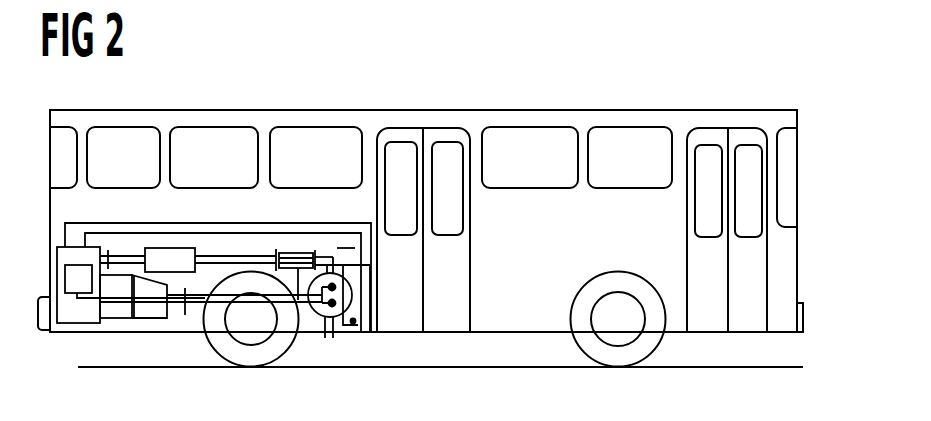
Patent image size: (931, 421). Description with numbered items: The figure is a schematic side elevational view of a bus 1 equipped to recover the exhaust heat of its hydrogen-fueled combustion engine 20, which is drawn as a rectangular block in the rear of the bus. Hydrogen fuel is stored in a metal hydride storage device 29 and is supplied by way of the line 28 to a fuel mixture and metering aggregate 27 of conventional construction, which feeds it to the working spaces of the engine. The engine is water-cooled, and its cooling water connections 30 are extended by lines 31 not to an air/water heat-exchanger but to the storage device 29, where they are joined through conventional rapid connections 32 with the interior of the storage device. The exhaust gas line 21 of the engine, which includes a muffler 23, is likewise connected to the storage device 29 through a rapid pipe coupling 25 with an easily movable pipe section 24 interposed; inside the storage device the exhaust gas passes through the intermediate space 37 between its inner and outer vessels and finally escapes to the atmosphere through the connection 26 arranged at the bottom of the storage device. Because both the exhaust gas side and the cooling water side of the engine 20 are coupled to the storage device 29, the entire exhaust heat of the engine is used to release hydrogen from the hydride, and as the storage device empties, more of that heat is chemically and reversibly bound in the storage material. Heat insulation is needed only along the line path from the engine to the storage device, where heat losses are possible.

The bus 1 is at (333, 107).
The combustion engine 20 is at (83, 323).
The exhaust gas line 21 is at (227, 254).
The muffler 23 is at (162, 248).
The easily movable pipe section 24 is at (277, 249).
The rapid pipe coupling 25 is at (316, 251).
The connection 26 is at (335, 333).
The fuel mixture and metering aggregate 27 is at (74, 295).
The line 28 is at (150, 306).
The metal hydride storage device 29 is at (314, 319).
The cooling water connections 30 is at (74, 223).
The lines 31 is at (242, 233).
The rapid connections 32 is at (372, 322).
The intermediate space 37 is at (355, 249).